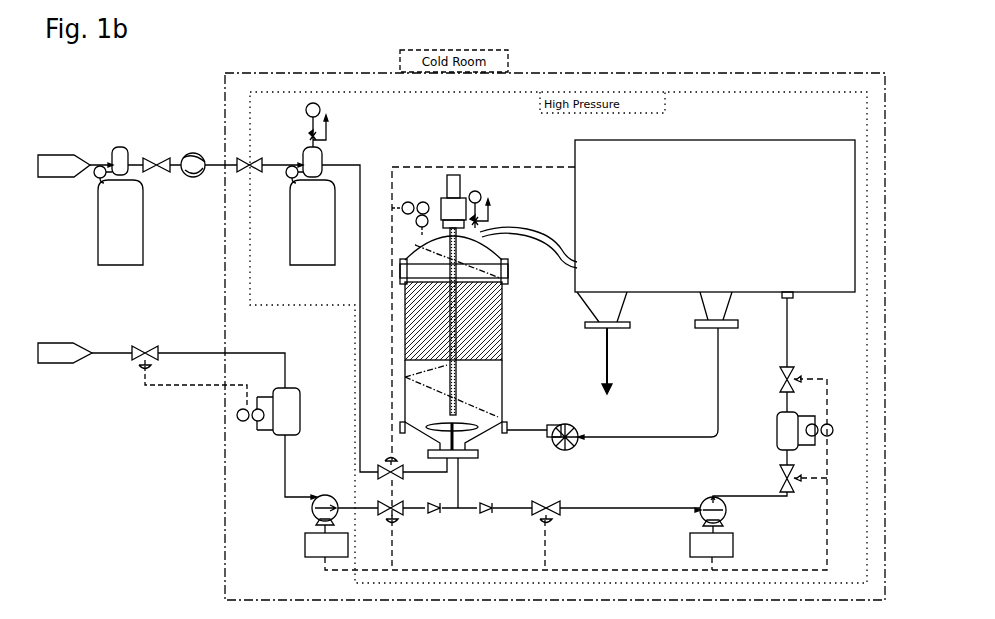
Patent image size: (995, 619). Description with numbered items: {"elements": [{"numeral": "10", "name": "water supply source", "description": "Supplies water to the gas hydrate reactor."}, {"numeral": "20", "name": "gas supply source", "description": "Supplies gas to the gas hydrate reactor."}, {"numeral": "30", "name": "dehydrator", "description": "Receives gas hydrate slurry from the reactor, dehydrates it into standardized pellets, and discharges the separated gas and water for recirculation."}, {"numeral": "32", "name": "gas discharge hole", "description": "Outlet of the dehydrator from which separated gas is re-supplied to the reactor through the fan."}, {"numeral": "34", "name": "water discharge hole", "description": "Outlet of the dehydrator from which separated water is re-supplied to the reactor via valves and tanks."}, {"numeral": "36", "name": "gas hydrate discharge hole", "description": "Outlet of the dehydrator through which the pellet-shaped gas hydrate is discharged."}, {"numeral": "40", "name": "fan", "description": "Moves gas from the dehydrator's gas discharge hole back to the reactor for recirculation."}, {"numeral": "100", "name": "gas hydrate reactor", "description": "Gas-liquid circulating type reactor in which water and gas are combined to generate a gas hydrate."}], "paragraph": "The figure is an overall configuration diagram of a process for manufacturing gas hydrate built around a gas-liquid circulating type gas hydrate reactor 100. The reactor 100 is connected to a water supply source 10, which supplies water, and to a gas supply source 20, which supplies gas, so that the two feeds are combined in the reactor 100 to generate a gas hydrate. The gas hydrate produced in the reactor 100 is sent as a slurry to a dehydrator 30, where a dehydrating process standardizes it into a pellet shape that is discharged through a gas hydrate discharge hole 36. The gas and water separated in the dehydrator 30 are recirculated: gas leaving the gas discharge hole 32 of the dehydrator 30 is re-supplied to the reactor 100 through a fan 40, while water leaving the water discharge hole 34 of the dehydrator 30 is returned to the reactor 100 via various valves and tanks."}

The liquid supply tank 10 is at (58, 343).
The gas supply tank 20 is at (60, 156).
The cold chamber 30 is at (574, 229).
The support foot 32 is at (700, 312).
The outlet fitting 34 is at (793, 298).
The support foot 36 is at (597, 312).
The circulation pump 40 is at (575, 450).
The high pressure vessel 100 is at (505, 338).